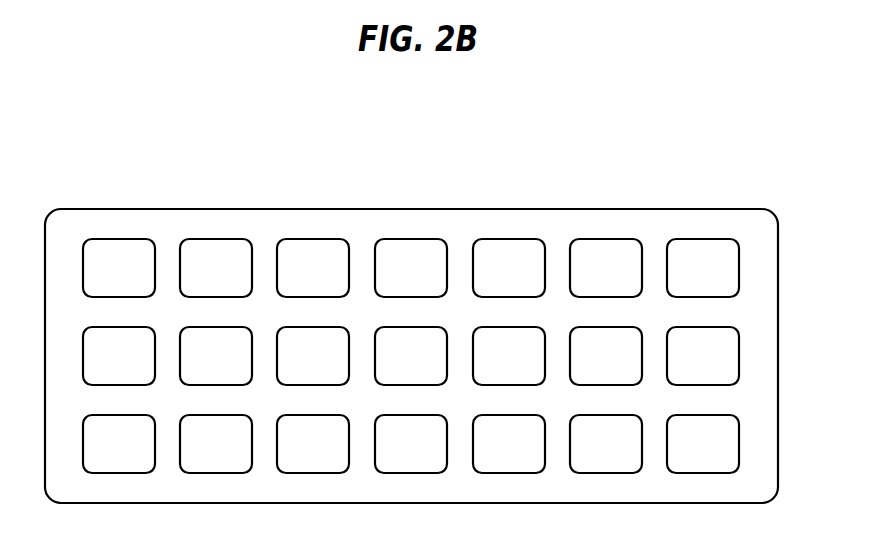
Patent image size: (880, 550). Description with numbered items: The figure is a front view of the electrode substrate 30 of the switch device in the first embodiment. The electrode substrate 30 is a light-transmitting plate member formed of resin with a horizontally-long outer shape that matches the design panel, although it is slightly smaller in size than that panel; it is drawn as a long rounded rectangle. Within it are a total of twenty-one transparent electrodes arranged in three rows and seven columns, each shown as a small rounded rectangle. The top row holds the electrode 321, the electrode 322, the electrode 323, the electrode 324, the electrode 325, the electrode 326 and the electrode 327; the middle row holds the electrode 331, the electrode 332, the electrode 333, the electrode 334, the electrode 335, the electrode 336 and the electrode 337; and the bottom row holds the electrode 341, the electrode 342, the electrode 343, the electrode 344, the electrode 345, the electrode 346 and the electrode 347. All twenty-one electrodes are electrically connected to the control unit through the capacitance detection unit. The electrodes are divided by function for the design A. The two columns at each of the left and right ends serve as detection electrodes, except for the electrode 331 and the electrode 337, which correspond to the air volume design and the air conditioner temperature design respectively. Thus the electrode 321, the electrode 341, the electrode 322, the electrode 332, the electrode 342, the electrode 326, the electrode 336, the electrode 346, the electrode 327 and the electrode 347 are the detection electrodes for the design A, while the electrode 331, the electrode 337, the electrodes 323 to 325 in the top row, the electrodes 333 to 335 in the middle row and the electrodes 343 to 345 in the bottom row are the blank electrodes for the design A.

The electrode substrate 30 is at (713, 208).
The electrode 321 is at (127, 239).
The electrode 322 is at (224, 239).
The electrode 323 is at (321, 239).
The electrode 324 is at (419, 239).
The electrode 325 is at (517, 239).
The electrode 326 is at (614, 239).
The electrode 327 is at (711, 239).
The electrode 331 is at (127, 327).
The electrode 332 is at (224, 327).
The electrode 333 is at (321, 327).
The electrode 334 is at (419, 327).
The electrode 335 is at (517, 327).
The electrode 336 is at (614, 327).
The electrode 337 is at (711, 327).
The electrode 341 is at (127, 415).
The electrode 342 is at (224, 415).
The electrode 343 is at (321, 415).
The electrode 344 is at (419, 415).
The electrode 345 is at (517, 415).
The electrode 346 is at (614, 415).
The electrode 347 is at (711, 415).